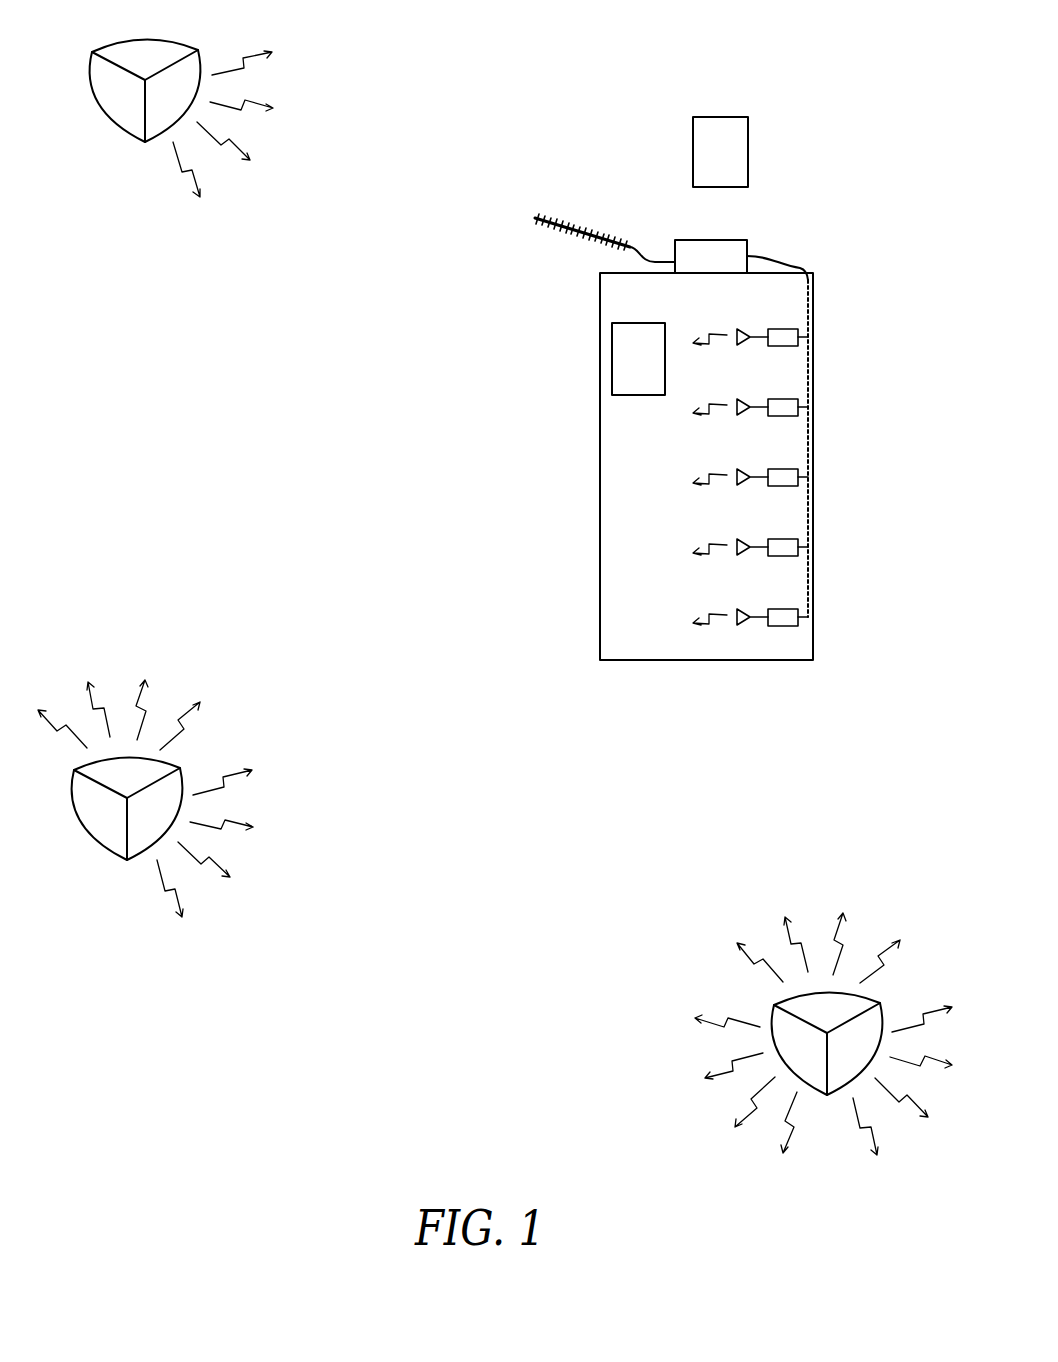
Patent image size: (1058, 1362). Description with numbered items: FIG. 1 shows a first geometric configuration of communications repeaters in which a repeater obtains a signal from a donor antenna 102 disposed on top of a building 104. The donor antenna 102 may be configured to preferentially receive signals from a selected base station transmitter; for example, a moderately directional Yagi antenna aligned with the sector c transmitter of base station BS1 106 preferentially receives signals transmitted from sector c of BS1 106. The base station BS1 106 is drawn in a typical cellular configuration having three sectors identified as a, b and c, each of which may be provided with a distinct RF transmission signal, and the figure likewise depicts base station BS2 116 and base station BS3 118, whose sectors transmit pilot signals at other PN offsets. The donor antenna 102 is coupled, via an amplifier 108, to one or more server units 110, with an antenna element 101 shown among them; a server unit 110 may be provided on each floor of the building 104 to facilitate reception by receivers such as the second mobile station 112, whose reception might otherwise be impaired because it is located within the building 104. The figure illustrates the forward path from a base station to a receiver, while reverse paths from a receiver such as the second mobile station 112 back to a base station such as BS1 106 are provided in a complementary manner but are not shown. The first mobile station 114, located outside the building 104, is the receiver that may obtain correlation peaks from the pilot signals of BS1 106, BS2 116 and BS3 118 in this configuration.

The antenna element 101 is at (753, 388).
The donor antenna 102 is at (600, 212).
The building 104 is at (600, 592).
The base station BS1 106 is at (93, 185).
The amplifier 108 is at (722, 238).
The server units 110 is at (753, 598).
The mobile station MS-2 112 is at (628, 322).
The mobile station MS1 114 is at (735, 116).
The base station BS2 116 is at (105, 885).
The base station BS3 118 is at (742, 967).